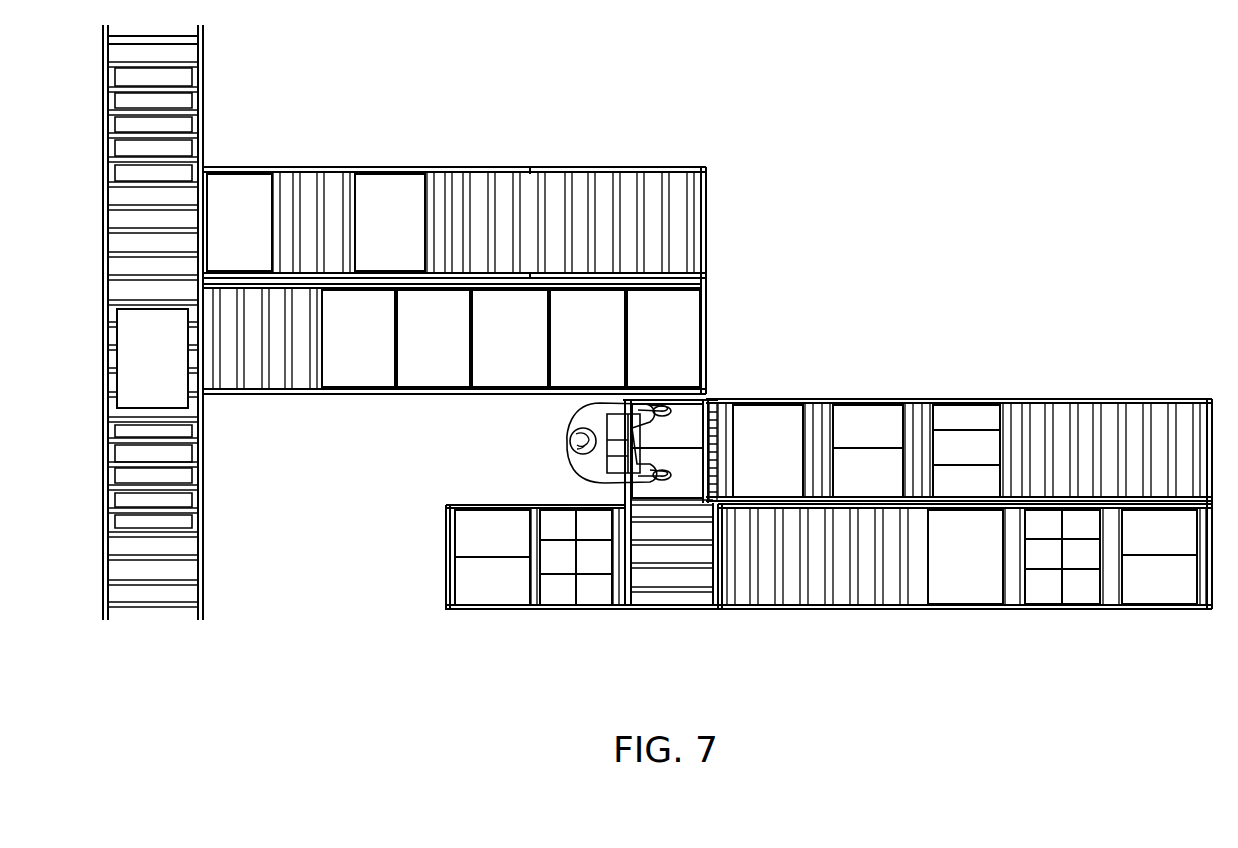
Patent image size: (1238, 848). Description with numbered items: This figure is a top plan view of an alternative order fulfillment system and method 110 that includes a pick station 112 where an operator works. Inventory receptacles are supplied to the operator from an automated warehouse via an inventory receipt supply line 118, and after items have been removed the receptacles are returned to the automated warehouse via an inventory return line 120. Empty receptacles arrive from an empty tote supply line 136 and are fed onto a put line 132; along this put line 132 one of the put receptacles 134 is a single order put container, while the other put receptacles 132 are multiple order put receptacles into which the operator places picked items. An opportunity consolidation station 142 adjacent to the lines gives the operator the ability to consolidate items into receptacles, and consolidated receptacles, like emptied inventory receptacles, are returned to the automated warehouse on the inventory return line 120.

The order fulfillment system and method 110 is at (897, 175).
The pick station 112 is at (204, 528).
The inventory receipt supply line 118 is at (1030, 399).
The inventory return line 120 is at (950, 612).
The put line 132 is at (372, 394).
The put receptacle 134 is at (706, 318).
The empty tote supply line 136 is at (203, 83).
The opportunity consolidation station 142 is at (560, 612).